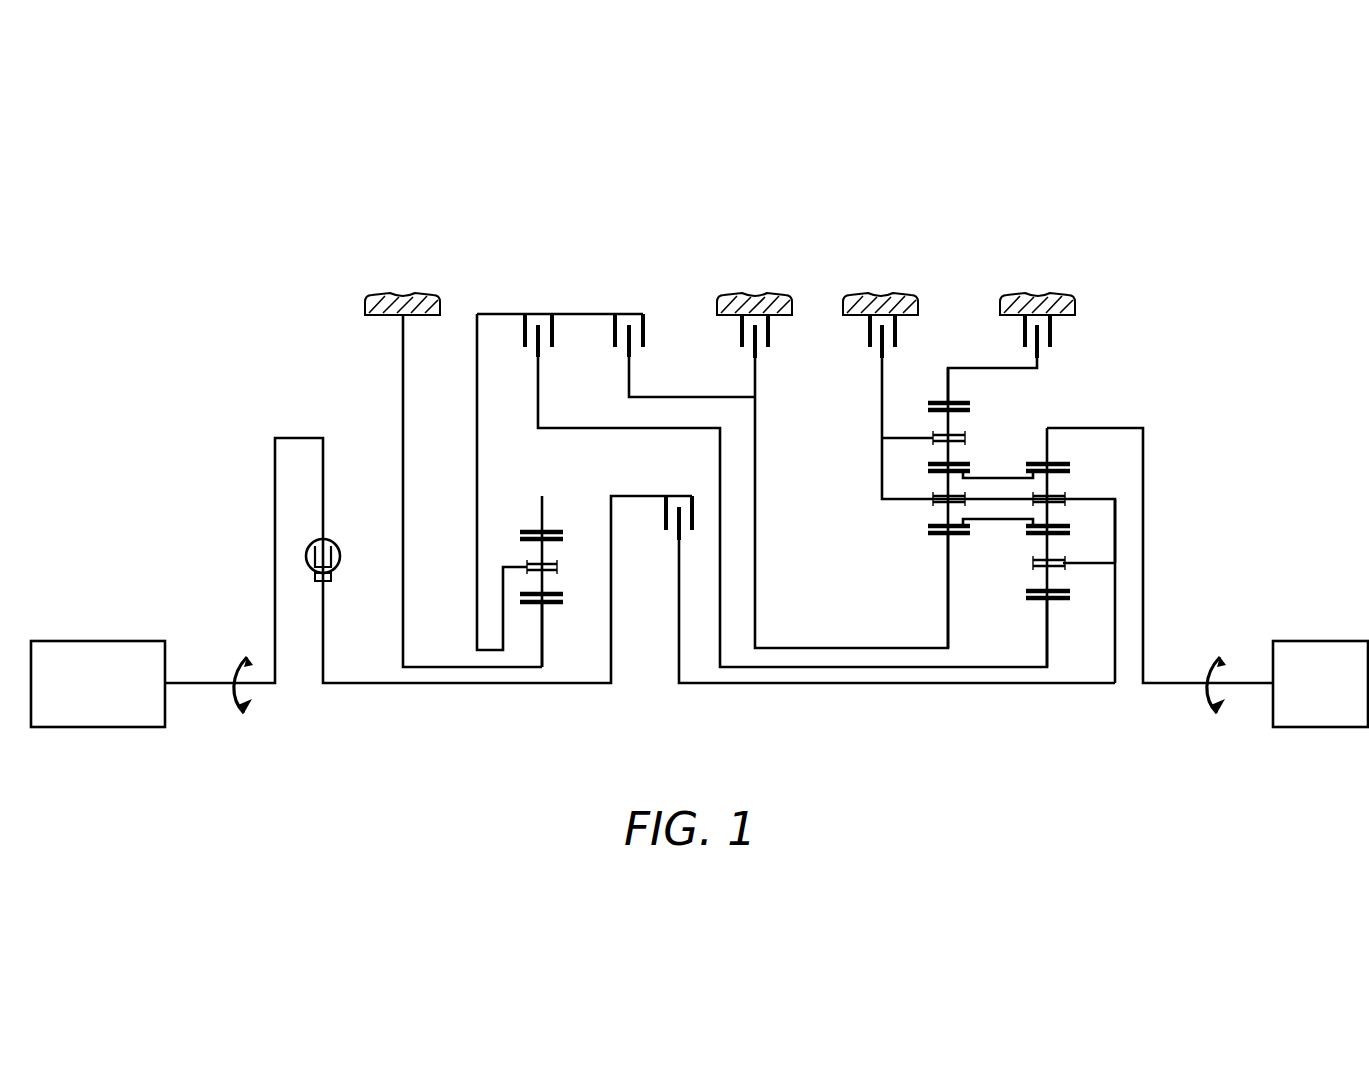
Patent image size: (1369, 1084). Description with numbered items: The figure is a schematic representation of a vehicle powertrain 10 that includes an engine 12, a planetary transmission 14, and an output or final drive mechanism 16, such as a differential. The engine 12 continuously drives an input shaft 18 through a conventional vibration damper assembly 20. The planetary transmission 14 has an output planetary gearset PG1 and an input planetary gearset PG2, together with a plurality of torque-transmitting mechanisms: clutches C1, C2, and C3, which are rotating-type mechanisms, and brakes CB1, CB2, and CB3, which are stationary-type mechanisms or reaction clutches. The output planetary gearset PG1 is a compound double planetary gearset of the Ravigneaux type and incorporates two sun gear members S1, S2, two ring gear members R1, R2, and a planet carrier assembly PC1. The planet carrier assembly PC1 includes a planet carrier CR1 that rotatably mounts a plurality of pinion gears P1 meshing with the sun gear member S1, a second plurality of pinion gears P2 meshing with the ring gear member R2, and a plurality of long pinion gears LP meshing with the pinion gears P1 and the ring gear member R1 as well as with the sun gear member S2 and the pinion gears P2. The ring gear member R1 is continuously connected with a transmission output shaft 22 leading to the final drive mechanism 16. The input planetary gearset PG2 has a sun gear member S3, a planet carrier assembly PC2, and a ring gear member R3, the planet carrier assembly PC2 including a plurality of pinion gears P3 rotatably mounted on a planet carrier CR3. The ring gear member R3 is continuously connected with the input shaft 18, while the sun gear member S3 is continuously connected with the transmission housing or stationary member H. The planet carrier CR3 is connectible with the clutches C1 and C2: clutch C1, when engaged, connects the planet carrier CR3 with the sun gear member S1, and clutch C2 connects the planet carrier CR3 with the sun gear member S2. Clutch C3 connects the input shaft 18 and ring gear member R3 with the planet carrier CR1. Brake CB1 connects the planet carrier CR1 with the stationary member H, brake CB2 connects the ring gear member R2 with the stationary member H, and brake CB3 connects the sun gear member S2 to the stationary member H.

The powertrain 10 is at (326, 273).
The engine 12 is at (98, 642).
The planetary transmission 14 is at (762, 243).
The output or final drive mechanism 16 is at (1327, 642).
The input shaft 18 is at (368, 683).
The vibration damper assembly 20 is at (343, 554).
The transmission output shaft 22 is at (1178, 682).
The transmission housing or stationary member H is at (405, 293).
The torque-transmitting mechanism C1 is at (786, 477).
The torque-transmitting mechanism C2 is at (684, 342).
The torque-transmitting mechanism C3 is at (889, 576).
The torque-transmitting mechanism CB1 is at (987, 475).
The torque-transmitting mechanism CB2 is at (1003, 335).
The torque-transmitting mechanism CB3 is at (840, 458).
The output planetary gearset PG1 is at (1066, 543).
The input planetary gearset PG2 is at (538, 519).
The ring gear member R1 is at (1054, 454).
The ring gear member R2 is at (956, 392).
The ring gear member R3 is at (537, 523).
The pinion gears P1 is at (1064, 573).
The pinion gears P2 is at (966, 429).
The pinion gears P3 is at (525, 557).
The sun gear member S1 is at (1054, 609).
The sun gear member S2 is at (974, 514).
The sun gear member S3 is at (565, 634).
The long pinion gears LP is at (1066, 509).
The planet carrier assembly PC1 is at (1079, 491).
The planet carrier assembly PC2 is at (572, 570).
The planet carrier CR1 is at (1116, 528).
The planet carrier CR3 is at (503, 580).